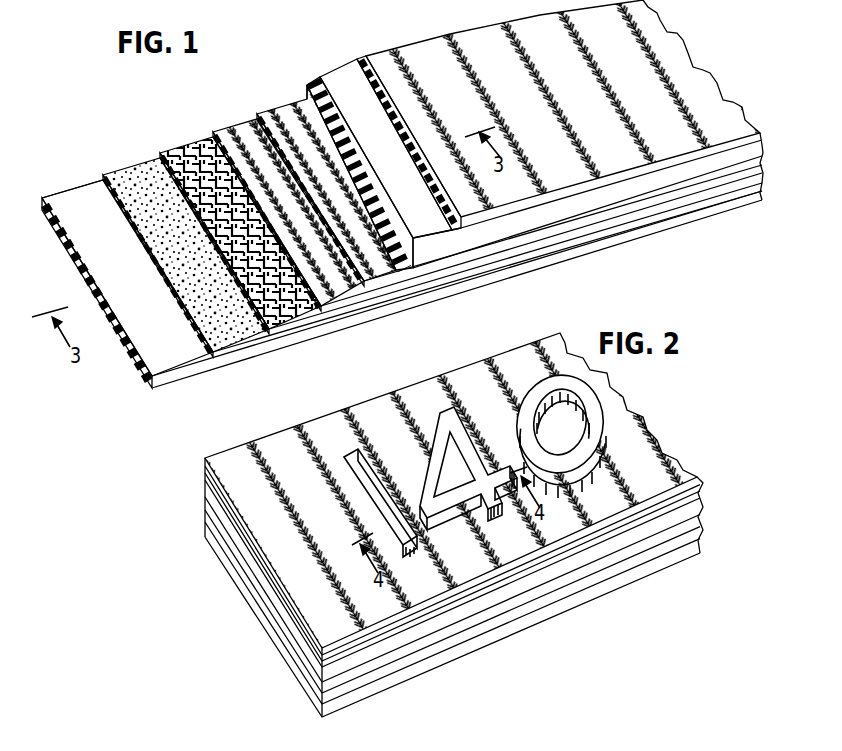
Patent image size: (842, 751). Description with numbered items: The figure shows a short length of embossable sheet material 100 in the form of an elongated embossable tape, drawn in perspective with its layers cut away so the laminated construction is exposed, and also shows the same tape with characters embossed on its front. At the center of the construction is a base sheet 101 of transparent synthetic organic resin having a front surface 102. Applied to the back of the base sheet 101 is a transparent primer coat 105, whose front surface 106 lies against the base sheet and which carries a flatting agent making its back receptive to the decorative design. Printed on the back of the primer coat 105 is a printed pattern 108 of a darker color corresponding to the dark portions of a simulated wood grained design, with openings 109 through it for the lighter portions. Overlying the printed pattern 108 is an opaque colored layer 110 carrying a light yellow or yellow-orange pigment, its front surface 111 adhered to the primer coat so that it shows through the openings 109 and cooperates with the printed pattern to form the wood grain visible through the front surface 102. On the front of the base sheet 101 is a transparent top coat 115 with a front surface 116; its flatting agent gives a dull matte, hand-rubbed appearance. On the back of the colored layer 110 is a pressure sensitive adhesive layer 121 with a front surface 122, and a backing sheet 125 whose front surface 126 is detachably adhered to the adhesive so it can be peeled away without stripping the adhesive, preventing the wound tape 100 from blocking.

In FIG. 1, the embossable sheet material 100 is at (137, 136).
In FIG. 2, the embossable sheet material 100 is at (224, 589).
In FIG. 1, the base sheet 101 is at (318, 76).
In FIG. 2, the base sheet 101 is at (230, 523).
In FIG. 1, the front surface 102 is at (400, 173).
In FIG. 1, the primer coat 105 is at (280, 124).
In FIG. 2, the primer coat 105 is at (205, 476).
In FIG. 1, the front surface 106 is at (350, 200).
In FIG. 1, the printed pattern 108 is at (213, 131).
In FIG. 2, the printed pattern 108 is at (215, 494).
In FIG. 1, the openings 109 is at (236, 135).
In FIG. 1, the colored layer 110 is at (194, 156).
In FIG. 2, the colored layer 110 is at (280, 625).
In FIG. 1, the front surface 111 is at (262, 250).
In FIG. 1, the top coat 115 is at (466, 44).
In FIG. 2, the top coat 115 is at (205, 467).
In FIG. 1, the front surface 116 is at (598, 115).
In FIG. 2, the front surface 116 is at (330, 508).
In FIG. 1, the pressure sensitive adhesive layer 121 is at (133, 176).
In FIG. 2, the pressure sensitive adhesive layer 121 is at (282, 640).
In FIG. 1, the front surface 122 is at (205, 270).
In FIG. 1, the backing sheet 125 is at (82, 196).
In FIG. 2, the backing sheet 125 is at (295, 673).
In FIG. 1, the front surface 126 is at (157, 302).